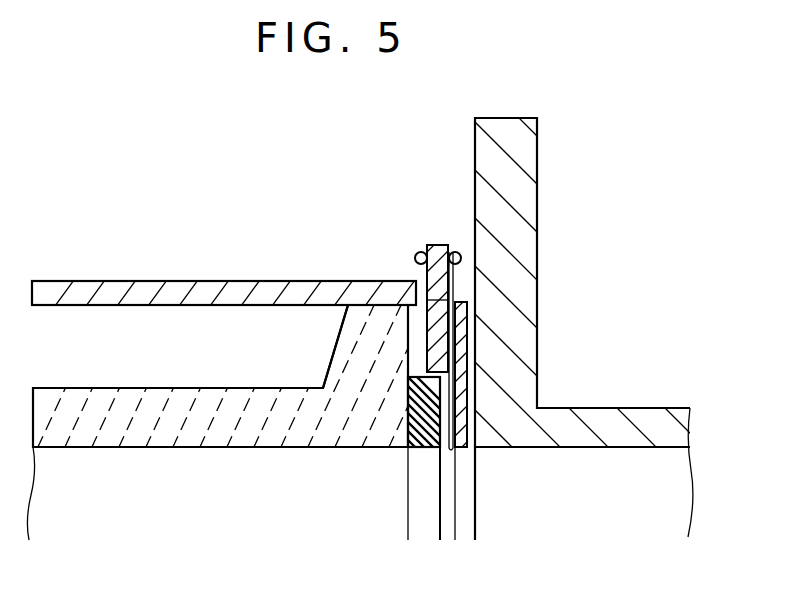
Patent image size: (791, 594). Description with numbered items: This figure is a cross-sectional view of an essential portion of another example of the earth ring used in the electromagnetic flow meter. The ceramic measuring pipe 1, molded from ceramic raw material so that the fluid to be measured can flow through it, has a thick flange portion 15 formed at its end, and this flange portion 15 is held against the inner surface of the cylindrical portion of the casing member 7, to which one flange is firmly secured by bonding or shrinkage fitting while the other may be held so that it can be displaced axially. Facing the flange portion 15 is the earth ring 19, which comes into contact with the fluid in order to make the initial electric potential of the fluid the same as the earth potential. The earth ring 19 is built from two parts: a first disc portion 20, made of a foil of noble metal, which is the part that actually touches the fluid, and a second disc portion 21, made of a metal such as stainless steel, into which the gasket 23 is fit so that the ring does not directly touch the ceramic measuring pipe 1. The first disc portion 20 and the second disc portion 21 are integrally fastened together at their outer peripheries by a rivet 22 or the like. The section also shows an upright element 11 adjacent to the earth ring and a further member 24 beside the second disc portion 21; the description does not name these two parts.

The ceramic measuring pipe 1 is at (60, 387).
The casing member 7 is at (80, 281).
The wall 11 is at (496, 124).
The flange portion 15 is at (369, 304).
The earth ring 19 is at (433, 244).
The first disc portion 20 is at (451, 450).
The second disc portion 21 is at (432, 348).
The rivet 22 is at (419, 262).
The gasket 23 is at (414, 449).
The spacer block 24 is at (466, 335).